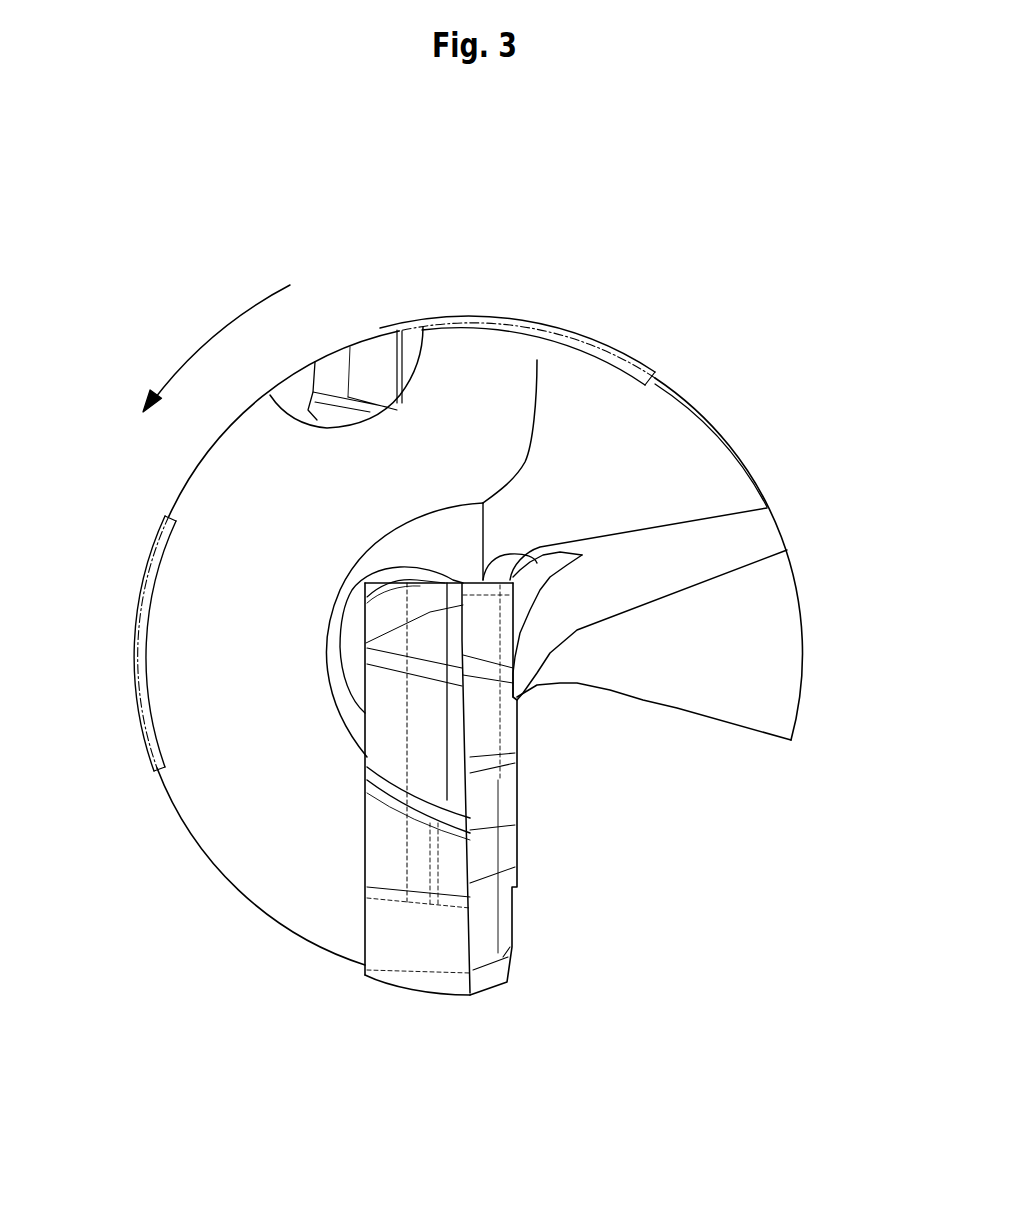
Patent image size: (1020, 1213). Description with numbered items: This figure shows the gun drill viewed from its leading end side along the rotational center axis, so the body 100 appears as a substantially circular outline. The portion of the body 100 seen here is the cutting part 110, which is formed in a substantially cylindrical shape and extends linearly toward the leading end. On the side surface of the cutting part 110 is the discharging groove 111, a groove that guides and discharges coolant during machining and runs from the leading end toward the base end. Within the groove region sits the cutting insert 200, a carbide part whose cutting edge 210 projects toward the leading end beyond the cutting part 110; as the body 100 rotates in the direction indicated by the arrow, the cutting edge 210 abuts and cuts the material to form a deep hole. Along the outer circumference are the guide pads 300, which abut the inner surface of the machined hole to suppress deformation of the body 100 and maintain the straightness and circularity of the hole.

The body 100 is at (784, 490).
The cutting part 110 is at (802, 605).
The discharging groove 111 is at (702, 725).
The cutting insert 200 is at (487, 845).
The cutting edge 210 is at (519, 808).
The guide pads 300 is at (570, 323).